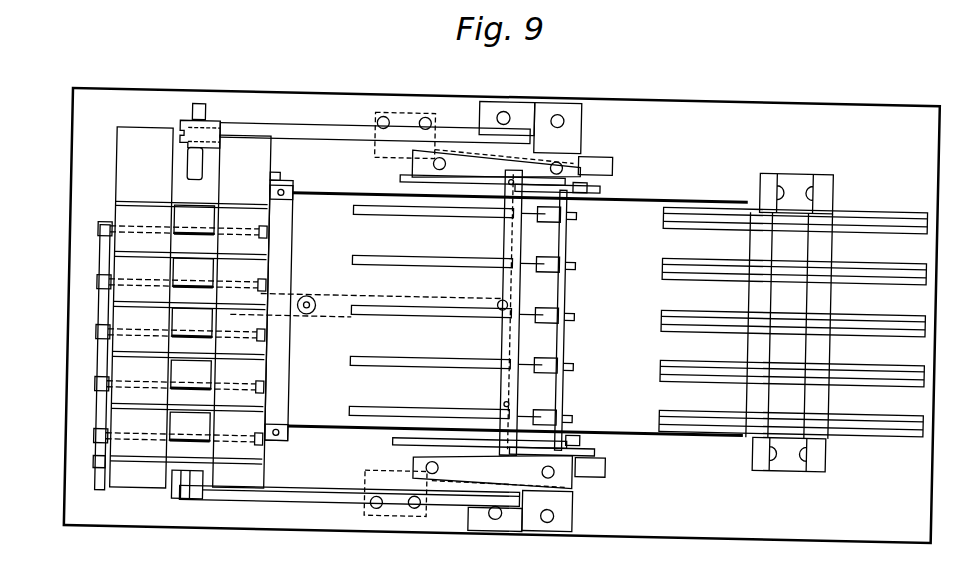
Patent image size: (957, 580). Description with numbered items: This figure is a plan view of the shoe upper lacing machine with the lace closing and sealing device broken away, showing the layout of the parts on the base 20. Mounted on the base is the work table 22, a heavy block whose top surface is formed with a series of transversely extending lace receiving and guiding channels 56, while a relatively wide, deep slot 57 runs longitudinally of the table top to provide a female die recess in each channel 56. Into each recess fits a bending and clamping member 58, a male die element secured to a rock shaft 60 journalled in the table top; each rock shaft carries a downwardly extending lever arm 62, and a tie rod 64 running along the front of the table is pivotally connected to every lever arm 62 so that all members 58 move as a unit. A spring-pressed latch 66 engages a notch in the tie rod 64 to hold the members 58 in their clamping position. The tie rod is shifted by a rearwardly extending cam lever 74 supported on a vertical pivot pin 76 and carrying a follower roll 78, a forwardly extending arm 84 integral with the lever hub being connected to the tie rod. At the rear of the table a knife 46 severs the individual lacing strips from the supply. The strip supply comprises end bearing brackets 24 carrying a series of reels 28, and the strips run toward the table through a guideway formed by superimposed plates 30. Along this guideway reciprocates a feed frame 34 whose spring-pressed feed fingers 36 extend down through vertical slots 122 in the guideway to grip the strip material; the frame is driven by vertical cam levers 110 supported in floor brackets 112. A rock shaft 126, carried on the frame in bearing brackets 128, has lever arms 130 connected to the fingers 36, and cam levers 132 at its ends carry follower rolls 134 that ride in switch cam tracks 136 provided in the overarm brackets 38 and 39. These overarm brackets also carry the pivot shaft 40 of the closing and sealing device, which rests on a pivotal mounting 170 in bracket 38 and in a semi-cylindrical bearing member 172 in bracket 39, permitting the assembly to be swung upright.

The base 20 is at (125, 88).
The work table 22 is at (118, 130).
The end bearing brackets 24 is at (800, 166).
The reels 28 is at (870, 198).
The plates 30 is at (338, 190).
The frame 34 is at (572, 300).
The feed fingers 36 is at (575, 262).
The overarm bracket 38 is at (308, 114).
The overarm bracket 39 is at (330, 497).
The pivot shaft 40 is at (190, 156).
The knife 46 is at (280, 222).
The lace receiving and guiding channels 56 is at (130, 245).
The slot 57 is at (220, 166).
The bending and clamping members 58 is at (200, 260).
The rock shaft 60 is at (140, 230).
The lever arm 62 is at (101, 238).
The tie rod 64 is at (101, 280).
The latch 66 is at (101, 462).
The cam lever 74 is at (370, 300).
The pivot pin 76 is at (312, 291).
The follower roll 78 is at (504, 292).
The arm 84 is at (282, 283).
The cam levers 110 is at (450, 178).
The floor brackets 112 is at (376, 148).
The slots 122 is at (410, 340).
The rock shaft 126 is at (512, 335).
The bearing brackets 128 is at (511, 218).
The lever arms 130 is at (536, 212).
The cam levers 132 is at (584, 182).
The follower rolls 134 is at (604, 179).
The switch cam tracks 136 is at (614, 152).
The pivotal mounting 170 is at (184, 122).
The bearing member 172 is at (192, 498).